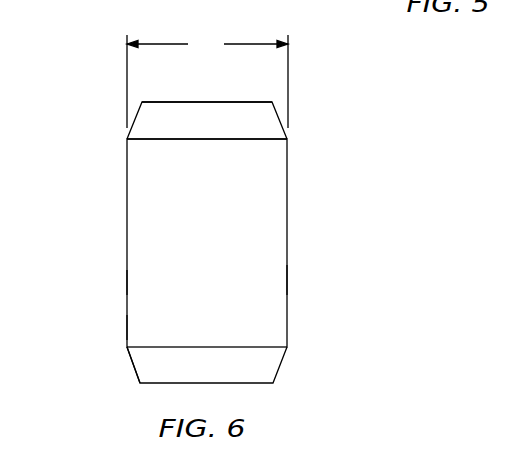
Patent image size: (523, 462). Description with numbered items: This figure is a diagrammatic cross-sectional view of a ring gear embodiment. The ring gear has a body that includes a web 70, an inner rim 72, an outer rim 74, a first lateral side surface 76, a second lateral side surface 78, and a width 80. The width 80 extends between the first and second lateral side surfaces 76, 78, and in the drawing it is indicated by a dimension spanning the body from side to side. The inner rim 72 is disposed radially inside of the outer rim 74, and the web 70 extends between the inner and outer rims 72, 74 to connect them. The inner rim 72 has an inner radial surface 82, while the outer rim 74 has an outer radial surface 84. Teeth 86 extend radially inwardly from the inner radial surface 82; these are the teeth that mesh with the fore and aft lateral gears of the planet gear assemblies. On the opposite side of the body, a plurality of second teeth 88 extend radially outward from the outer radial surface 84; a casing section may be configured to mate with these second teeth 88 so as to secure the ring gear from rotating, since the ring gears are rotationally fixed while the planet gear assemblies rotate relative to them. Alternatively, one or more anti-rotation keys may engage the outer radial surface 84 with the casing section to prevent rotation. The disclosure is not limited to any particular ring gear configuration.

The web 70 is at (138, 240).
The inner rim 72 is at (127, 327).
The outer rim 74 is at (123, 165).
The first lateral side surface 76 is at (127, 282).
The second lateral side surface 78 is at (288, 280).
The width 80 is at (207, 79).
The inner radial surface 82 is at (153, 348).
The outer radial surface 84 is at (226, 138).
The teeth 86 is at (253, 368).
The second teeth 88 is at (159, 127).